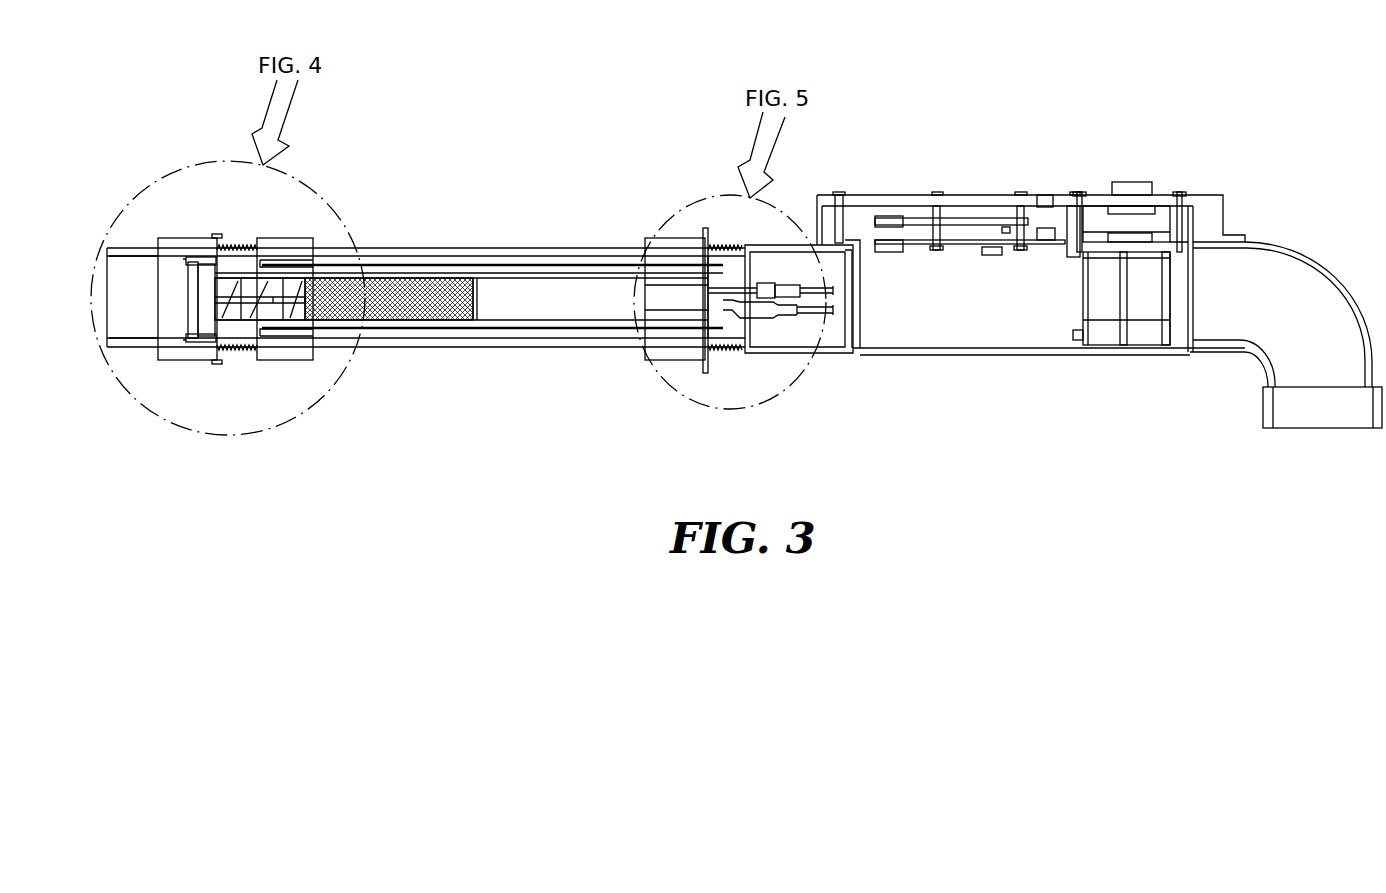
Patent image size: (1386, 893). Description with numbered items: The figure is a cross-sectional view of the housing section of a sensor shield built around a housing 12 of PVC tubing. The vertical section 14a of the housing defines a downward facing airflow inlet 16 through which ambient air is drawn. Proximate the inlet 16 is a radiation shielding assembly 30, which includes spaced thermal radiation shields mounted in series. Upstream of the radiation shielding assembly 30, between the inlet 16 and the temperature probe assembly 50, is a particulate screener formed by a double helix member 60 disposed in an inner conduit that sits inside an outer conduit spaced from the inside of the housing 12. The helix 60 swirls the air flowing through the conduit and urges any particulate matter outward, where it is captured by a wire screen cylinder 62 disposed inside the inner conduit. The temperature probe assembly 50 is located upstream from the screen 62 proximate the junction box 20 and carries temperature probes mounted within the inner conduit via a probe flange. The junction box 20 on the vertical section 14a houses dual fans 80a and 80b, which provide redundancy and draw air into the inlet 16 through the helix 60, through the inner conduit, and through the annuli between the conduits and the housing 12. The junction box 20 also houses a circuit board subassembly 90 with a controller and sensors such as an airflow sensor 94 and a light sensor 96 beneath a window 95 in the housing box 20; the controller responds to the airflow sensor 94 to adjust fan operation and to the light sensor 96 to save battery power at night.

The housing 12 is at (417, 250).
The vertical section 14a is at (508, 256).
The airflow inlet 16 is at (137, 322).
The junction box 20 is at (887, 195).
The radiation shielding assembly 30 is at (188, 288).
The temperature probe assembly 50 is at (673, 292).
The double helix member 60 is at (258, 290).
The wire screen cylinder 62 is at (417, 303).
The fan 80a is at (1108, 308).
The fan 80b is at (1145, 310).
The circuit board subassembly 90 is at (952, 245).
The airflow sensor 94 is at (995, 255).
The window 95 is at (1040, 195).
The light sensor 96 is at (1047, 240).